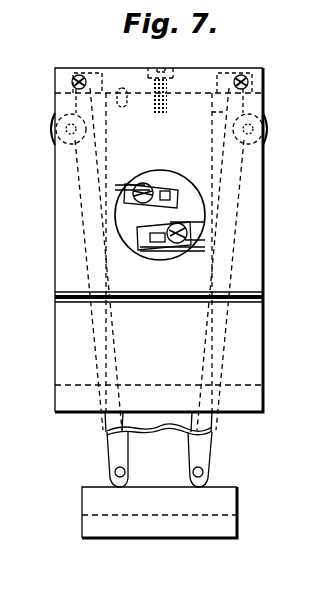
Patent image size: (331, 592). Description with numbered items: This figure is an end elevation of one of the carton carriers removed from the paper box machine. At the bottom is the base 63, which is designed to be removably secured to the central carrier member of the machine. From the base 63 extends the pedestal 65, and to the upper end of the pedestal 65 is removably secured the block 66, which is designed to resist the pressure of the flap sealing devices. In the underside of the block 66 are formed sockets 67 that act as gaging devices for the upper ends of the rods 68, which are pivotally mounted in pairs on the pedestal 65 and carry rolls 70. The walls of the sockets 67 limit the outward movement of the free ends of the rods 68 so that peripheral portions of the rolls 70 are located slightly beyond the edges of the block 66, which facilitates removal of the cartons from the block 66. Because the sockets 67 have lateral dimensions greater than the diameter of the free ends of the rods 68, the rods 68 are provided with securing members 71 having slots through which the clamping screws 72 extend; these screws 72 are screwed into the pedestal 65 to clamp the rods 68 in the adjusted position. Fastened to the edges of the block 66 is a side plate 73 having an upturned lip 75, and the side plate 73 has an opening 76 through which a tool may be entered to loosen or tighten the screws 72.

The base 63 is at (150, 535).
The pedestal 65 is at (213, 113).
The block 66 is at (188, 93).
The socket 67 is at (91, 73).
The rod 68 is at (113, 450).
The roll 70 is at (54, 130).
The securing member 71 is at (155, 205).
The clamping screw 72 is at (143, 185).
The side plate 73 is at (54, 163).
The upturned lip 75 is at (256, 358).
The opening 76 is at (203, 203).